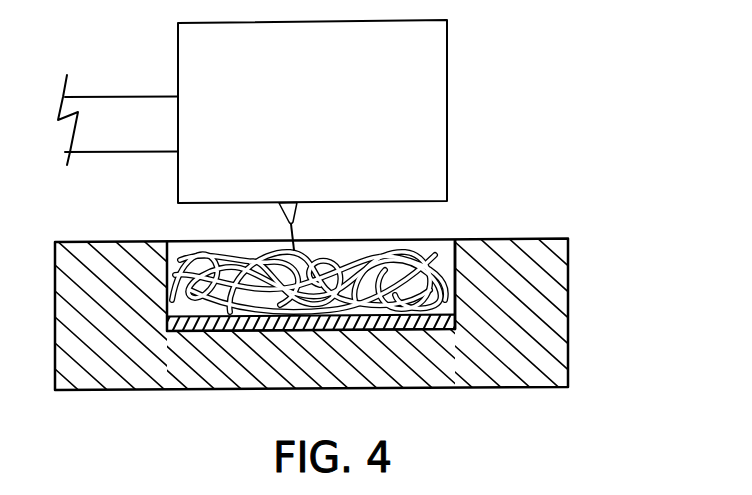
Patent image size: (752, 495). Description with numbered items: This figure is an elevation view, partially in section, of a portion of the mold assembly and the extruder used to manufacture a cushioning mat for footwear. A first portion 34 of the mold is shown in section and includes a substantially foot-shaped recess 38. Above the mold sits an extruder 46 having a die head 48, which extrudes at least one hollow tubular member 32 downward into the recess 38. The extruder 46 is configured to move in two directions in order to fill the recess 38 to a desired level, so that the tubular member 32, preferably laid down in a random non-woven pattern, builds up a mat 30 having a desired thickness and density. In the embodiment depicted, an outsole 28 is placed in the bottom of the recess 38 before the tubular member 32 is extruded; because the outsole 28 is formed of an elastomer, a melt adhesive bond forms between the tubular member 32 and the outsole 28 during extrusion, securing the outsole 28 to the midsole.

The extruder 46 is at (447, 99).
The die head 48 is at (298, 208).
The hollow tubular member 32 is at (287, 233).
The mat 30 is at (178, 238).
The foot-shaped recess 38 is at (455, 241).
The first portion of mold 34 is at (568, 306).
The outsole 28 is at (203, 332).